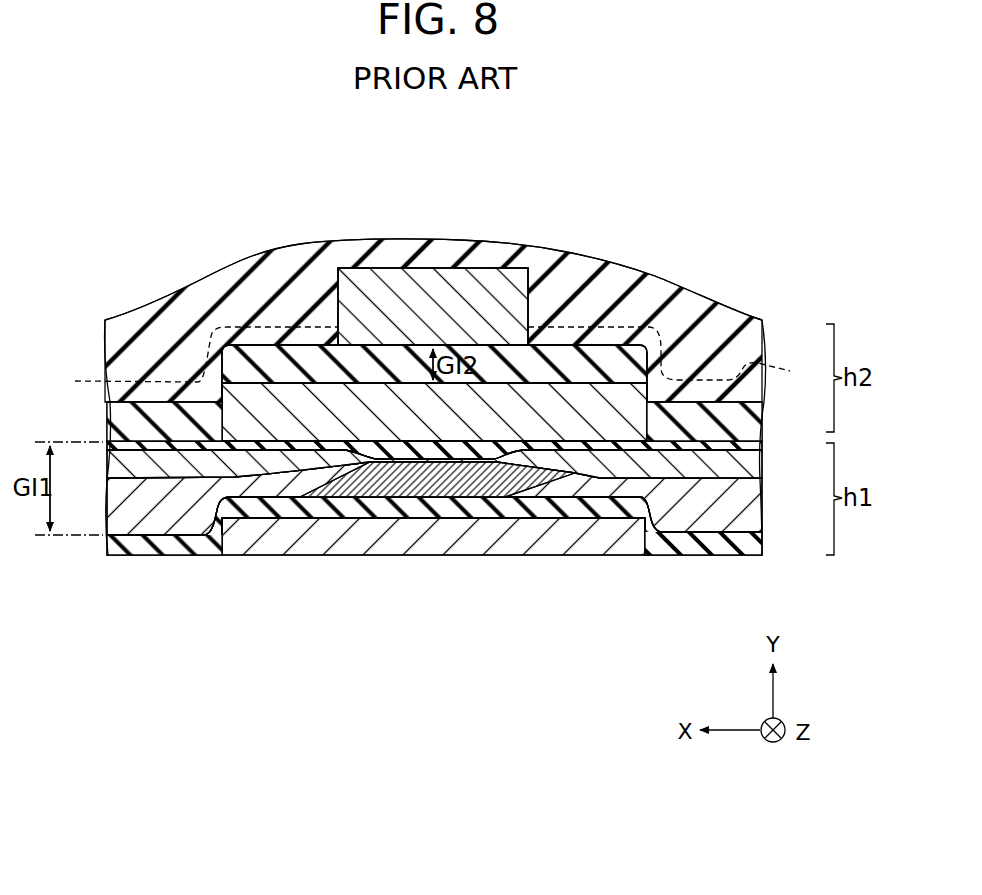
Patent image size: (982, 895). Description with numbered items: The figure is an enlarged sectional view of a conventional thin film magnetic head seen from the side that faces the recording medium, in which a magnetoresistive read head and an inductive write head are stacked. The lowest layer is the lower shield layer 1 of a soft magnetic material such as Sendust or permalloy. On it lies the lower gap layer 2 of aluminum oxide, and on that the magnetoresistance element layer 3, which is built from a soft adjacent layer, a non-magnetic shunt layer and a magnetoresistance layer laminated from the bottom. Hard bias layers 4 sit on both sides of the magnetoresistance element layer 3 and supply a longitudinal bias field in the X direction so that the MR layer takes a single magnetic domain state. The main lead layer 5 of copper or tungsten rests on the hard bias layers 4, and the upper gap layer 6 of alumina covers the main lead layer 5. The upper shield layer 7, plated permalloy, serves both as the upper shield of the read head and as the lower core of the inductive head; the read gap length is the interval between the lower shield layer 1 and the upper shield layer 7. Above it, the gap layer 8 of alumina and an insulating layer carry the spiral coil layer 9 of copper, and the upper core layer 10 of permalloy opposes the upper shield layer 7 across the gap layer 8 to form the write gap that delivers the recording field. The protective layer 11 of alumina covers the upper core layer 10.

The lower shield layer 1 is at (518, 545).
The lower gap layer 2 is at (748, 544).
The magnetoresistance element layer 3 is at (427, 480).
The hard bias layer 4 is at (123, 500).
The main lead layer 5 is at (123, 459).
The upper gap layer 6 is at (755, 444).
The upper shield layer 7 is at (636, 411).
The gap layer 8 is at (127, 417).
The coil layer 9 is at (433, 361).
The upper core layer 10 is at (427, 290).
The protective layer 11 is at (743, 342).